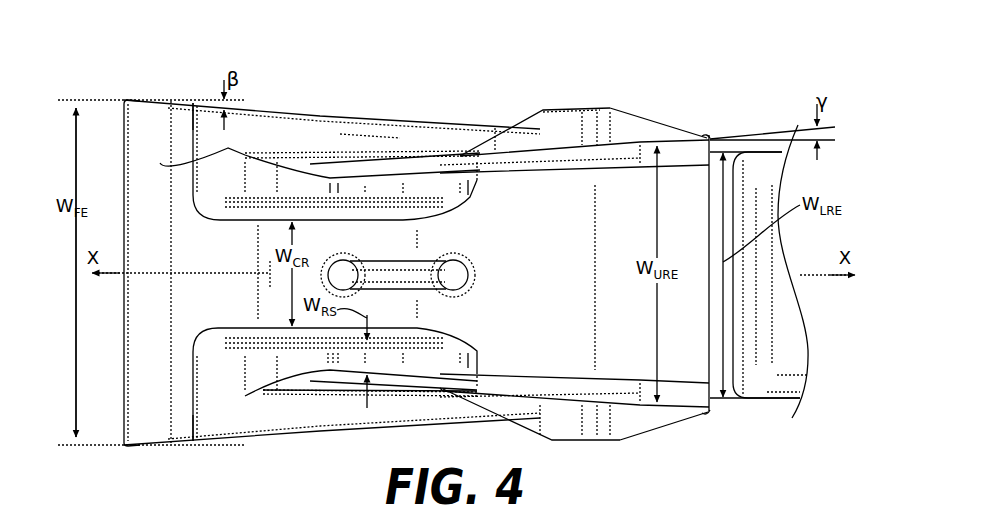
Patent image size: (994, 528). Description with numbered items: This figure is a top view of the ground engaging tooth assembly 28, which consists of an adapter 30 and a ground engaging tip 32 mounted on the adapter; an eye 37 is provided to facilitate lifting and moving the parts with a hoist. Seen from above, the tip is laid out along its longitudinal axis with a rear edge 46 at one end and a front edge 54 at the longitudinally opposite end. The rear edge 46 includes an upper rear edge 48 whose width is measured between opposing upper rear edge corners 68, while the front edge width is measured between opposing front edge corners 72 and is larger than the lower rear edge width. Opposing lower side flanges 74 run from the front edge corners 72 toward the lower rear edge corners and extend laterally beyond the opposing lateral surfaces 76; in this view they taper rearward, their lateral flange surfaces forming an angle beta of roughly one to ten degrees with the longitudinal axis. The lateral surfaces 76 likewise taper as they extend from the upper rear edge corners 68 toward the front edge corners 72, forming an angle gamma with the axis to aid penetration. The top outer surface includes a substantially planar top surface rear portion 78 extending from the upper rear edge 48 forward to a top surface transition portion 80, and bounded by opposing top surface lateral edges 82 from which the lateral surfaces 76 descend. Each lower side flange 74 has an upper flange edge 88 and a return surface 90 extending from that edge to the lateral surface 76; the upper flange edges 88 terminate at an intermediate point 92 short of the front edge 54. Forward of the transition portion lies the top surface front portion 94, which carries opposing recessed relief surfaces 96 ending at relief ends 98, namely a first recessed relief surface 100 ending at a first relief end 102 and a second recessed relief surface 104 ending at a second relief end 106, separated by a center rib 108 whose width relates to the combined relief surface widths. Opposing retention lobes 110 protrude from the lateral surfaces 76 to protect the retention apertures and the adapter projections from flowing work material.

The ground engaging tooth assembly 28 is at (587, 70).
The adapter 30 is at (768, 105).
The ground engaging tip 32 is at (360, 68).
The eye 37 is at (434, 257).
The rear edge 46 is at (698, 312).
The upper rear edge 48 is at (708, 193).
The front edge 54 is at (123, 362).
The upper rear edge corners 68 is at (702, 130).
The front edge corners 72 is at (125, 108).
The lower side flanges 74 is at (358, 122).
The lateral surfaces 76 is at (548, 150).
The top surface rear portion 78 is at (633, 192).
The top surface transition portion 80 is at (474, 186).
The top surface lateral edges 82 is at (540, 168).
The upper flange edges 88 is at (291, 122).
The return surfaces 90 is at (313, 130).
The intermediate point 92 is at (191, 110).
The top surface front portion 94 is at (277, 228).
The recessed relief surfaces 96 is at (380, 184).
The relief ends 98 is at (248, 150).
The first recessed relief surface 100 is at (430, 367).
The first relief end 102 is at (245, 397).
The second recessed relief surface 104 is at (405, 185).
The second relief end 106 is at (310, 159).
The center rib 108 is at (270, 287).
The retention lobes 110 is at (668, 120).